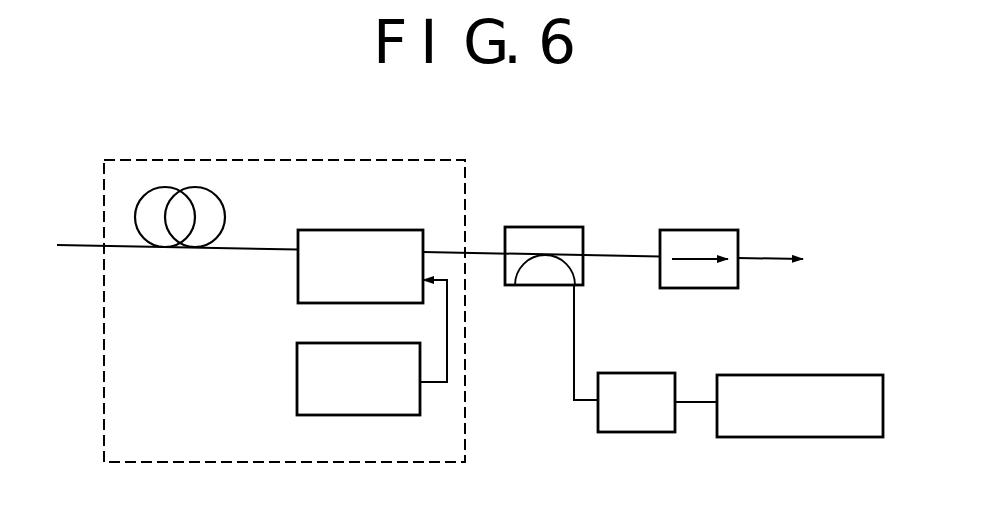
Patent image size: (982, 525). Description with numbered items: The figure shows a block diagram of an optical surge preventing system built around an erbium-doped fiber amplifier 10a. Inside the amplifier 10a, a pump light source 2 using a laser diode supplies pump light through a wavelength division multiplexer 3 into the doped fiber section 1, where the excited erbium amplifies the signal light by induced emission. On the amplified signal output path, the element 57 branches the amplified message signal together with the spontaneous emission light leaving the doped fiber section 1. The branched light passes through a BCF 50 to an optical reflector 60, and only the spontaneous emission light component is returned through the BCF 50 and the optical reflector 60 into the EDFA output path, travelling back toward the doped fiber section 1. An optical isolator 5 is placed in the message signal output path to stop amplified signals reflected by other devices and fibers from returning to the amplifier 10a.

The doped fiber section 1 is at (226, 210).
The pump light source 2 is at (297, 370).
The wavelength division multiplexer 3 is at (403, 230).
The optical isolator 5 is at (694, 230).
The rare earth-doped fiber amplifier 10a is at (466, 436).
The BCF 50 is at (660, 433).
The branching element 57 is at (553, 227).
The optical reflector 60 is at (818, 437).